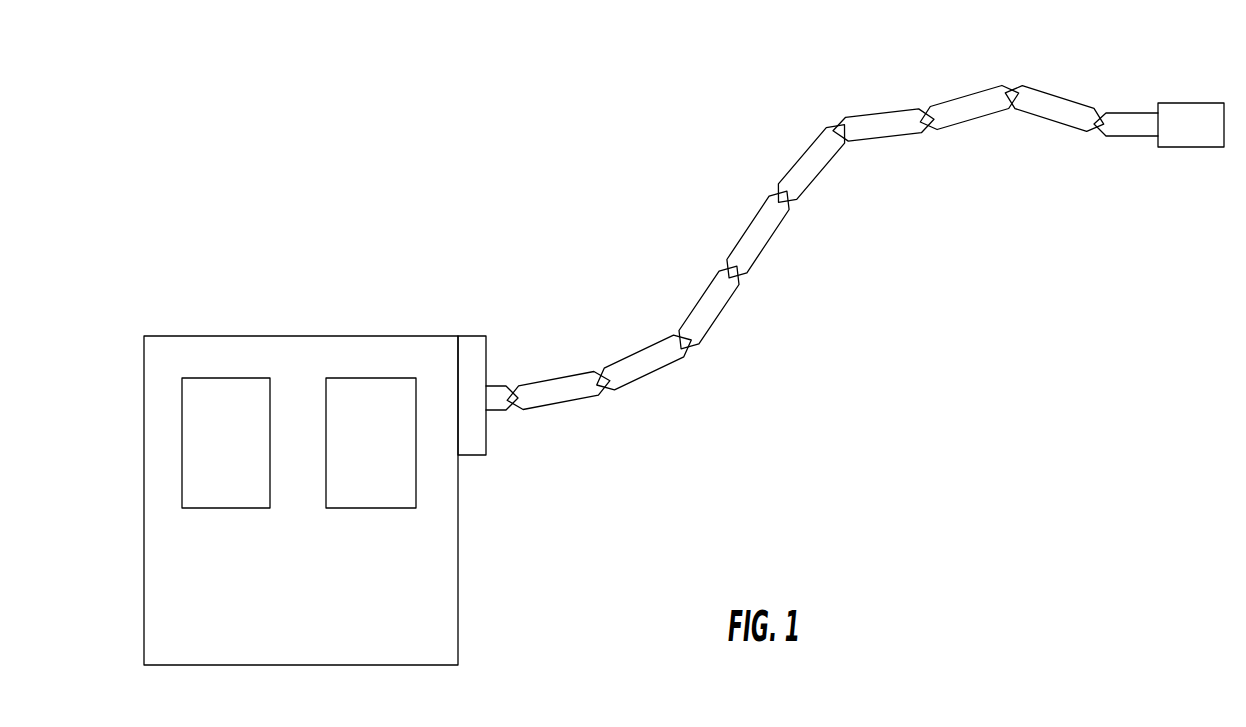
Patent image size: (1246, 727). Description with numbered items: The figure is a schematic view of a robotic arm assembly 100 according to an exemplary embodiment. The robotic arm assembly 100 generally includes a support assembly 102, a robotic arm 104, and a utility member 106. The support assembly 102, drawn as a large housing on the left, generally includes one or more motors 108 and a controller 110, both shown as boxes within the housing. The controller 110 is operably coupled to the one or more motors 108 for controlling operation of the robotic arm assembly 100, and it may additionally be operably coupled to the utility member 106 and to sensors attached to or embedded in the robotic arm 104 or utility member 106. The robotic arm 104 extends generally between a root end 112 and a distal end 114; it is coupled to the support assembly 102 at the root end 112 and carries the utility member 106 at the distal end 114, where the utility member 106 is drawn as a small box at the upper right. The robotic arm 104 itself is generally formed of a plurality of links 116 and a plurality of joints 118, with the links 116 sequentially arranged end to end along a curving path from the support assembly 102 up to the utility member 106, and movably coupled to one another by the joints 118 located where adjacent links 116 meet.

The robotic arm assembly 100 is at (490, 88).
The support assembly 102 is at (258, 335).
The robotic arm 104 is at (805, 248).
The utility member 106 is at (1188, 137).
The motors 108 is at (354, 478).
The controller 110 is at (210, 455).
The root end 112 is at (530, 452).
The distal end 114 is at (1114, 200).
The links 116 is at (700, 325).
The joints 118 is at (687, 358).